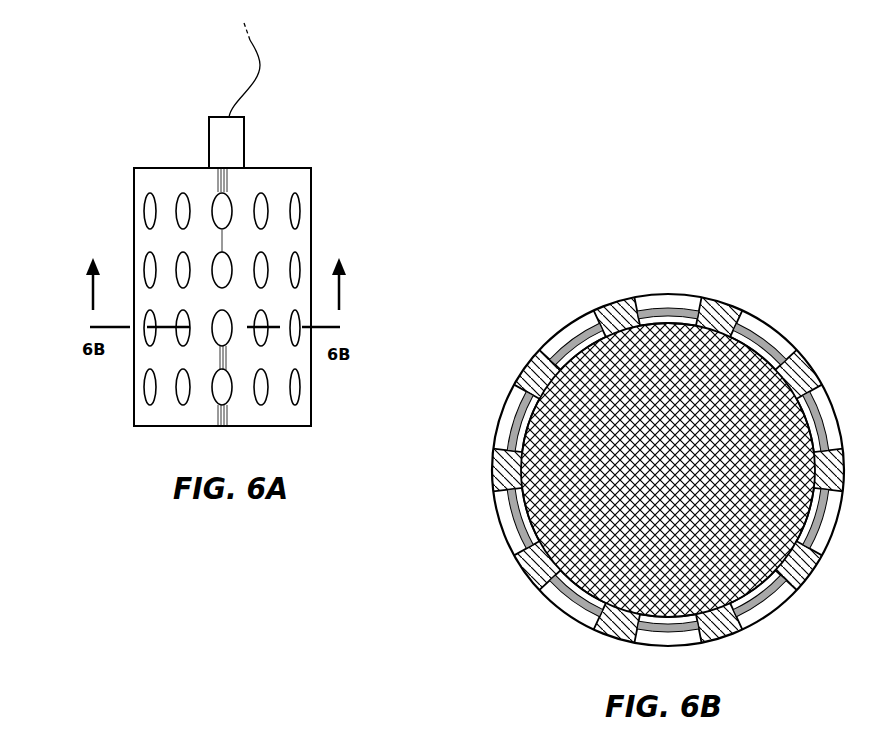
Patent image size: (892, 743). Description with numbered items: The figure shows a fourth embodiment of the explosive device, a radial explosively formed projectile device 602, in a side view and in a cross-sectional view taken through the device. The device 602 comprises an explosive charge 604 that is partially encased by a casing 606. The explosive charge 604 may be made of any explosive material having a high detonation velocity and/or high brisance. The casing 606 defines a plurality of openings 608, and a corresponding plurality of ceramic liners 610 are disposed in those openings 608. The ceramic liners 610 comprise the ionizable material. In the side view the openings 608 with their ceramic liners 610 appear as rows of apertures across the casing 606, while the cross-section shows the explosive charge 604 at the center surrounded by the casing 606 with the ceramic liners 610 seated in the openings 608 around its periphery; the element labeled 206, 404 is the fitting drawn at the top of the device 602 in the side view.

In FIG. 6A, the radial explosively formed projectile device 602 is at (106, 184).
In FIG. 6B, the radial explosively formed projectile device 602 is at (616, 419).
In FIG. 6A, the fluid conduit connector 206 is at (308, 95).
In FIG. 6A, the fluid conduit connector 404 is at (231, 142).
In FIG. 6B, the explosive charge 604 is at (690, 375).
In FIG. 6B, the casing 606 is at (615, 303).
In FIG. 6B, the openings 608 is at (530, 378).
In FIG. 6A, the ceramic liners 610 is at (183, 387).
In FIG. 6B, the ceramic liners 610 is at (515, 510).